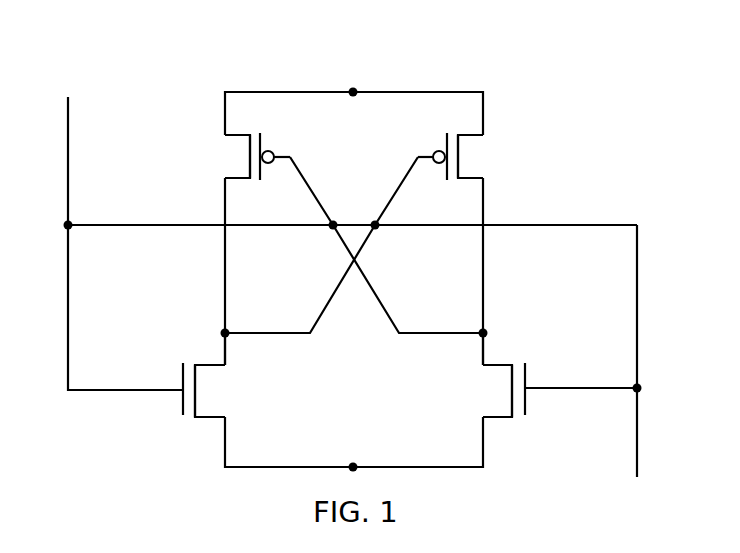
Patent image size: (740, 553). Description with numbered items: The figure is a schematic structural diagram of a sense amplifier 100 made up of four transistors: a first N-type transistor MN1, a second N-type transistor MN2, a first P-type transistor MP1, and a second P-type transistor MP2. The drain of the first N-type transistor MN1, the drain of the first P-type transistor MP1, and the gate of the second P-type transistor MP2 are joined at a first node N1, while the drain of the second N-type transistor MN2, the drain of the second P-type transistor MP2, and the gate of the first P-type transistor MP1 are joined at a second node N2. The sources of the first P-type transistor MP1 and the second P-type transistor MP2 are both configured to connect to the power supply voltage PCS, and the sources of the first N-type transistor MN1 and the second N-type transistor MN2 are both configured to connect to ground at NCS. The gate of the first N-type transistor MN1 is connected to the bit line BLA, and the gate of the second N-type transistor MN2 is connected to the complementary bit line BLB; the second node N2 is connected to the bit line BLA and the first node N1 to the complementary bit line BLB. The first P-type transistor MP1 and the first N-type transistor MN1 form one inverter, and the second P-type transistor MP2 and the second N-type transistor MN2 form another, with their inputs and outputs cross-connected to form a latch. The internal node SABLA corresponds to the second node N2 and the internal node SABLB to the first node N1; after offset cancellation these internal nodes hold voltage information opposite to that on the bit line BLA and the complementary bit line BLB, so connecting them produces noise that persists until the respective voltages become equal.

The sense amplifier 100 is at (183, 22).
The power supply voltage PCS is at (354, 79).
The ground NCS is at (353, 459).
The first P-type transistor MP1 is at (243, 156).
The second P-type transistor MP2 is at (467, 156).
The first N-type transistor MN1 is at (227, 390).
The second N-type transistor MN2 is at (485, 390).
The first node N1 is at (243, 349).
The second node N2 is at (466, 349).
The internal node SABLA is at (333, 247).
The internal node SABLB is at (373, 247).
The bit line BLA is at (351, 243).
The complementary bit line BLB is at (583, 351).